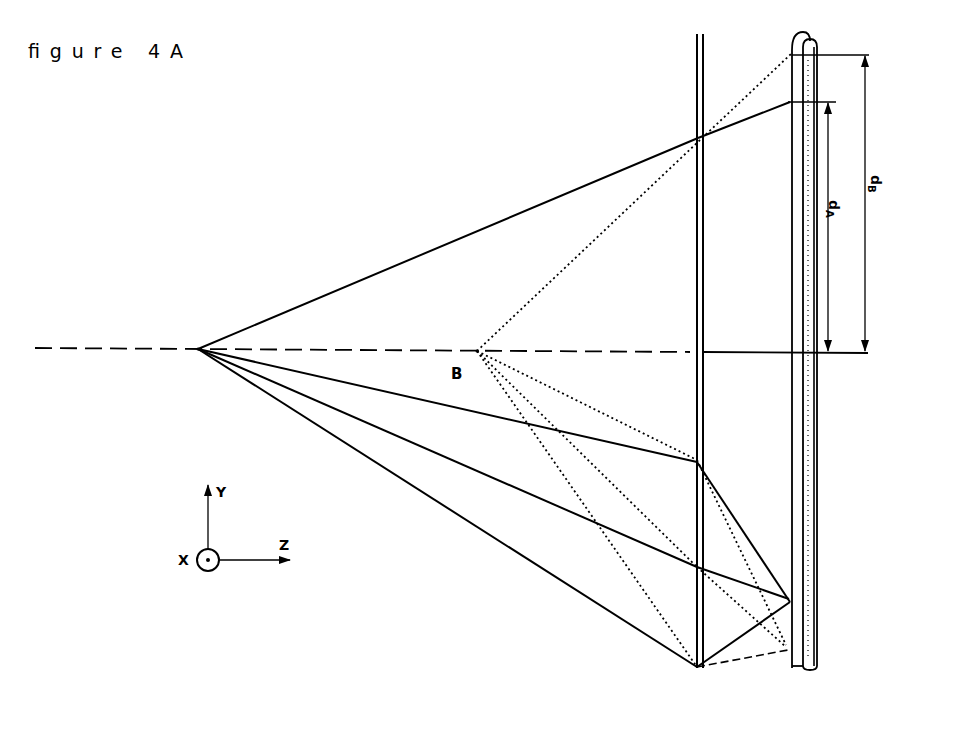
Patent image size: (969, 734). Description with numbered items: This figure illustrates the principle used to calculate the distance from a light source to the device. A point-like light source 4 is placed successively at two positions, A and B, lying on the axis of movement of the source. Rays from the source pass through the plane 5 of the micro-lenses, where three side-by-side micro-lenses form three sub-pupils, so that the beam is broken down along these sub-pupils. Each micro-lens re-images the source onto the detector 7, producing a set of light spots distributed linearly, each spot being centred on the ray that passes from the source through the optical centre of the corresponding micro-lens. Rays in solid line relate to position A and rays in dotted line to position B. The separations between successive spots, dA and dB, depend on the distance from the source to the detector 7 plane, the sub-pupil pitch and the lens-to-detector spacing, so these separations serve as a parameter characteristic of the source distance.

The light source 4 is at (193, 338).
The plane of the micro-lenses 5 is at (686, 671).
The detector 7 is at (784, 668).